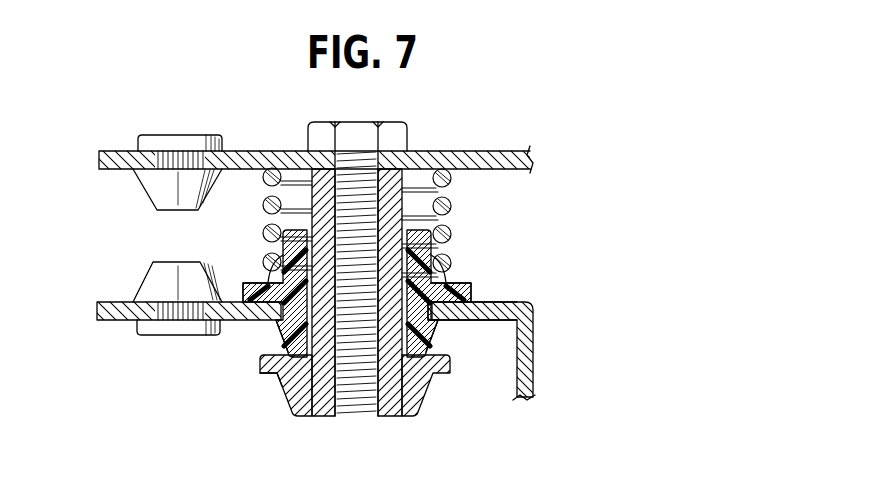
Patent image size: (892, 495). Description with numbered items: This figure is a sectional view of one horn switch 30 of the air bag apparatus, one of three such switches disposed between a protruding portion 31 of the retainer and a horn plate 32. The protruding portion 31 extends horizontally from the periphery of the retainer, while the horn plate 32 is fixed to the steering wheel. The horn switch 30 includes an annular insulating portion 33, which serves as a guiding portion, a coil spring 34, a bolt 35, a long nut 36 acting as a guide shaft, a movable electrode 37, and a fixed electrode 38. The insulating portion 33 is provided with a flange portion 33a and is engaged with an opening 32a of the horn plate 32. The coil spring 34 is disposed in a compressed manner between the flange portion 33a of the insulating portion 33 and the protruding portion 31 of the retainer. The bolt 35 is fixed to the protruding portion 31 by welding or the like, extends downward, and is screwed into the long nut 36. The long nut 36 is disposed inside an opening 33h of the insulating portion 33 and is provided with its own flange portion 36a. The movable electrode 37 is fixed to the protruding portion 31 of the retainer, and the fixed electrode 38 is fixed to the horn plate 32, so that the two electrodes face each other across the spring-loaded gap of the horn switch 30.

The horn switch 30 is at (614, 317).
The protruding portion 31 is at (481, 150).
The horn plate 32 is at (537, 303).
The opening 32a is at (441, 318).
The insulating portion 33 is at (462, 281).
The flange portion 33a is at (257, 280).
The opening 33h is at (307, 362).
The coil spring 34 is at (450, 208).
The bolt 35 is at (397, 122).
The long nut 36 is at (415, 405).
The flange portion 36a is at (282, 376).
The movable electrode 37 is at (177, 150).
The fixed electrode 38 is at (170, 316).